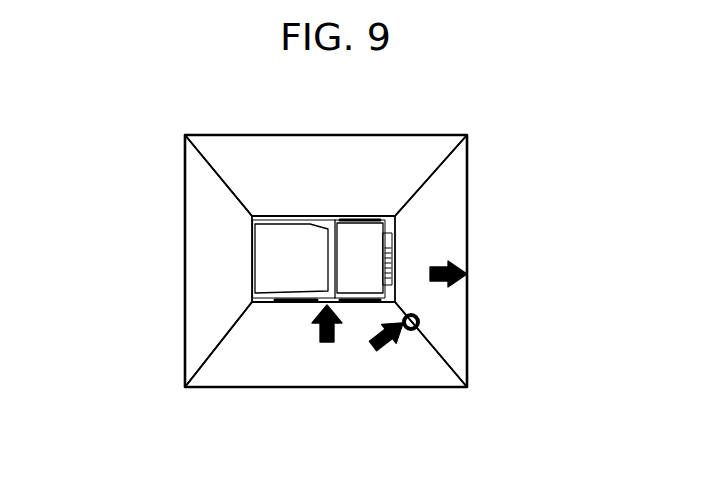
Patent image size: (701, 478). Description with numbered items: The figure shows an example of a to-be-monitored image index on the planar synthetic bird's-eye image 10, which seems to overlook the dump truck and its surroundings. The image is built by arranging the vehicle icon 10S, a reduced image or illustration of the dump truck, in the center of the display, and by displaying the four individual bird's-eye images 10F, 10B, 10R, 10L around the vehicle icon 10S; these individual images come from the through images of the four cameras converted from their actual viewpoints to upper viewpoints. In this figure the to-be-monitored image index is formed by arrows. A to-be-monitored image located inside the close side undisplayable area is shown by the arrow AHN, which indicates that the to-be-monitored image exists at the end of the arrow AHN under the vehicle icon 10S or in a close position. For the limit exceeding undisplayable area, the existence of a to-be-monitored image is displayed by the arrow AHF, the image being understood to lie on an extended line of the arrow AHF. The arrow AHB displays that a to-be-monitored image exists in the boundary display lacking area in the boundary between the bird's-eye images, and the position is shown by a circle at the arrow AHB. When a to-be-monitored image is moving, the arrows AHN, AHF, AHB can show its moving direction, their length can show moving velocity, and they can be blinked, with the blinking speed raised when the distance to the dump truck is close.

The synthetic bird's-eye image 10 is at (468, 171).
The individual bird's-eye image 10L is at (248, 148).
The vehicle icon 10S is at (358, 232).
The individual bird's-eye image 10B is at (197, 295).
The individual bird's-eye image 10R is at (223, 377).
The individual bird's-eye image 10F is at (455, 347).
The arrow AHF is at (470, 265).
The arrow AHN is at (328, 343).
The arrow AHB is at (389, 347).